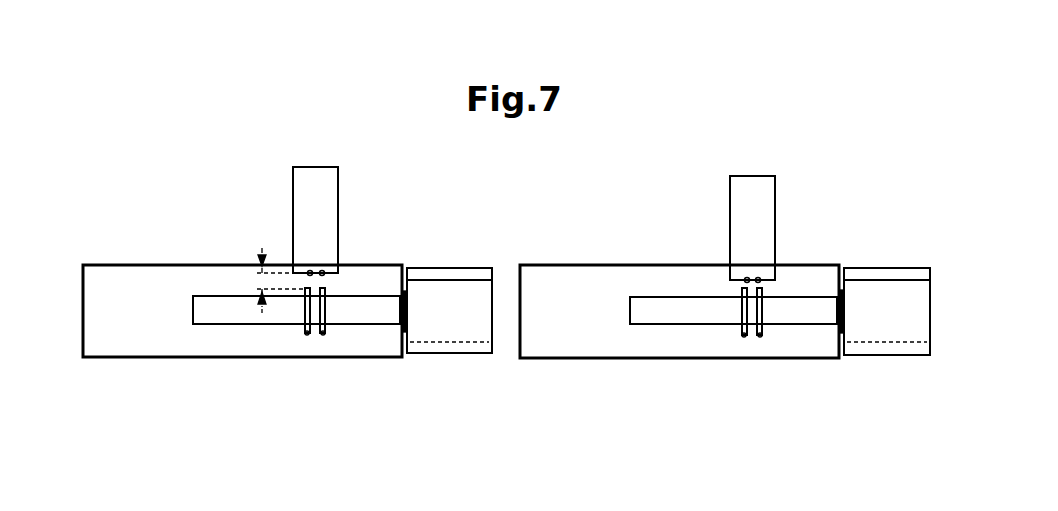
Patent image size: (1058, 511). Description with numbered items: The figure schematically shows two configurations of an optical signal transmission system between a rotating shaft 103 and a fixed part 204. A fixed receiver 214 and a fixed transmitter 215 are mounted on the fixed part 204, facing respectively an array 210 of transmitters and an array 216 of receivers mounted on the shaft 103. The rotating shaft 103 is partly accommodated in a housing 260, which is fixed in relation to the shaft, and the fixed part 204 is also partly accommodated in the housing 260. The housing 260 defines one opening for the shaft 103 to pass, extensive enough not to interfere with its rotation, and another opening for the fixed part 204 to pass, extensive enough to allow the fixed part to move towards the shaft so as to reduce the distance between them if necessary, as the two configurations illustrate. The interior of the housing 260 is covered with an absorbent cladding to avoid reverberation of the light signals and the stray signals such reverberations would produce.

The shaft 103 is at (217, 308).
The fixed part 204 is at (322, 212).
The array of transmitters 210 is at (321, 354).
The fixed receiver 214 is at (324, 277).
The fixed transmitter 215 is at (310, 276).
The array of receivers 216 is at (310, 333).
The housing 260 is at (123, 358).